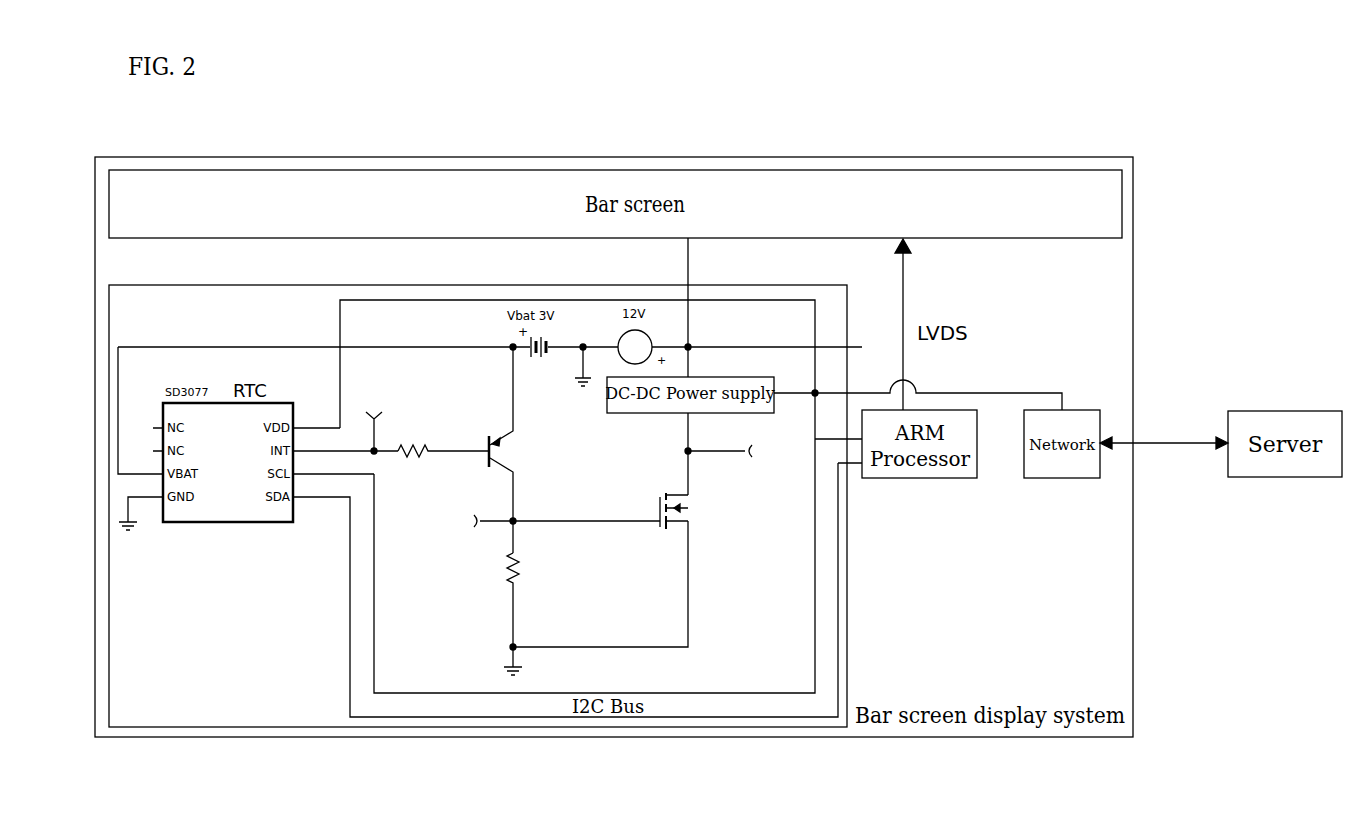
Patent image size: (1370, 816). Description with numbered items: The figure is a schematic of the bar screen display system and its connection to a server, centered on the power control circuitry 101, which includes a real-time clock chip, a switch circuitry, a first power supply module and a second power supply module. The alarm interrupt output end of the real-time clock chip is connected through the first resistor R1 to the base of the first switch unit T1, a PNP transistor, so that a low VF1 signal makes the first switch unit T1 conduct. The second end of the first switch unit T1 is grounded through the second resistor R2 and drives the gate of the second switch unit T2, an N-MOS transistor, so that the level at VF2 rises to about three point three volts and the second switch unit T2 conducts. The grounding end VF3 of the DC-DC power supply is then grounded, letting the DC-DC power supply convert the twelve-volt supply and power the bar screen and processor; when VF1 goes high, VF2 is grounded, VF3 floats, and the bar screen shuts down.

The power control circuitry 101 is at (133, 285).
The first resistor R1 is at (440, 441).
The second resistor R2 is at (521, 614).
The first switch unit T1 is at (527, 450).
The second switch unit T2 is at (713, 511).
The VF1 signal VF1 is at (378, 421).
The VF2 level VF2 is at (548, 522).
The VF3 grounding end VF3 is at (732, 452).